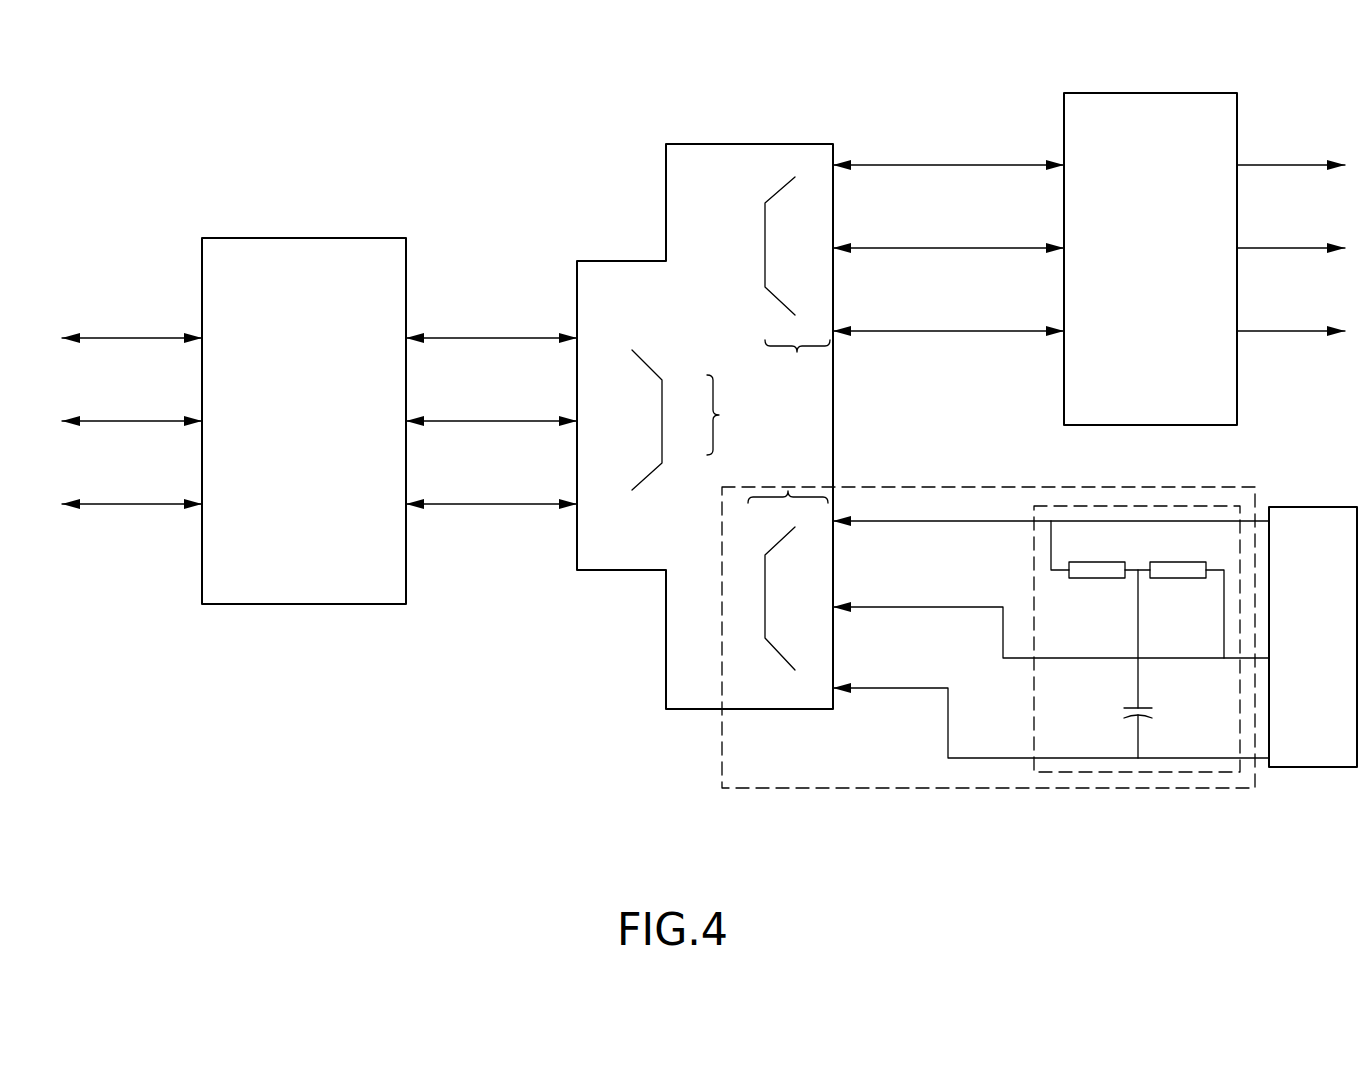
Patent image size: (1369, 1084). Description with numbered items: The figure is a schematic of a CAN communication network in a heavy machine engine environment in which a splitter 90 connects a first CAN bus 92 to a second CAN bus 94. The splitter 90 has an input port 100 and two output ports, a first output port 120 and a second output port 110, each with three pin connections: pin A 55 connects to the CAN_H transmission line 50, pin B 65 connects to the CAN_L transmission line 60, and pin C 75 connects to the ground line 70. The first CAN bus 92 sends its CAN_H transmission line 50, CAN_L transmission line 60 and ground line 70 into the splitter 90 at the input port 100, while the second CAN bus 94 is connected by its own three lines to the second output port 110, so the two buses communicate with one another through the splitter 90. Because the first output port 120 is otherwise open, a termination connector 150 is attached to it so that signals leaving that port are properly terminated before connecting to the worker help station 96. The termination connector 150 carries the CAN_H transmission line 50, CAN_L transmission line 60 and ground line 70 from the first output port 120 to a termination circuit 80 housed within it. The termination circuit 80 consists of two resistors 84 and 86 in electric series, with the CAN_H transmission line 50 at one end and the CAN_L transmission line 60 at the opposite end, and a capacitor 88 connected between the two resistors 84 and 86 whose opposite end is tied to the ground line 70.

The CAN_H transmission line 50 is at (958, 163).
The pin A 55 is at (610, 320).
The CAN_L transmission line 60 is at (958, 246).
The pin B 65 is at (610, 411).
The ground line 70 is at (958, 329).
The pin C 75 is at (605, 490).
The termination circuit 80 is at (1113, 505).
The resistor 84 is at (1078, 562).
The resistor 86 is at (1160, 562).
The capacitor 88 is at (1150, 712).
The splitter 90 is at (748, 143).
The first CAN bus 92 is at (1204, 259).
The second CAN bus 94 is at (234, 421).
The worker help station 96 is at (1095, 637).
The input port 100 is at (797, 369).
The second output port 110 is at (726, 415).
The first output port 120 is at (788, 474).
The termination connector 150 is at (968, 486).